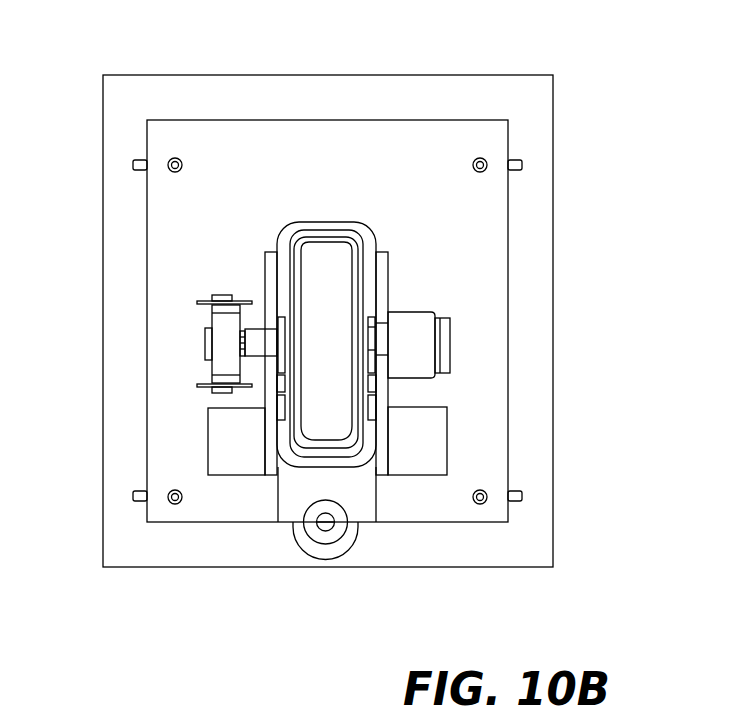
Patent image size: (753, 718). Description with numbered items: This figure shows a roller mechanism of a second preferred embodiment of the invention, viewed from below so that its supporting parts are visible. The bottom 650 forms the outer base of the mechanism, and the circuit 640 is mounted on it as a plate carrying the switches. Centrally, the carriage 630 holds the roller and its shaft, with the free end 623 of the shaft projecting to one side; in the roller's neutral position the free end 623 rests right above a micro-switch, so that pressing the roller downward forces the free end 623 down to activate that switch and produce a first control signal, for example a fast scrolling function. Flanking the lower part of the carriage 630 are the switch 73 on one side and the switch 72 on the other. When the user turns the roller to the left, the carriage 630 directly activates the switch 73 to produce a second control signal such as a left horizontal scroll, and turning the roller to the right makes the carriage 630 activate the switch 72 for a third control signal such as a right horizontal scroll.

The bottom 650 is at (543, 131).
The circuit 640 is at (167, 240).
The carriage 630 is at (305, 230).
The free end of the shaft 623 is at (411, 322).
The switch 73 is at (217, 435).
The switch 72 is at (447, 442).